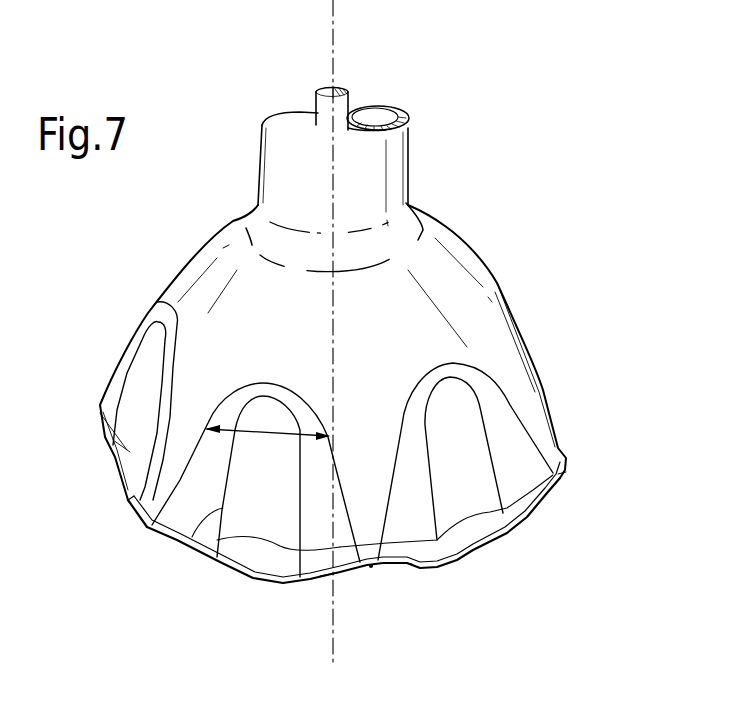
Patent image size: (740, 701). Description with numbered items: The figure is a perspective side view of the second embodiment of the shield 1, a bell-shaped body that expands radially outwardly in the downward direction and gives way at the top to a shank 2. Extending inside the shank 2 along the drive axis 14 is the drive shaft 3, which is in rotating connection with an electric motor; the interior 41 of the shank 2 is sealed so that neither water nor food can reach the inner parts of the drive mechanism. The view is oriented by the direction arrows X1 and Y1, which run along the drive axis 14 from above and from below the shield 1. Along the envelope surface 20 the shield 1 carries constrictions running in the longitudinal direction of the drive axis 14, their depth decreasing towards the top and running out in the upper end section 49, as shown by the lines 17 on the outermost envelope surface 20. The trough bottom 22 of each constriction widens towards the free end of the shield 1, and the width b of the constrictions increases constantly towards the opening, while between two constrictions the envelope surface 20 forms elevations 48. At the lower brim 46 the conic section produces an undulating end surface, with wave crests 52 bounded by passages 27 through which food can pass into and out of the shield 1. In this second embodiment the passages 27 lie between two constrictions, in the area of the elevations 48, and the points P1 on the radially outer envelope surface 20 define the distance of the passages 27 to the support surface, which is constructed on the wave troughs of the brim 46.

The shield 1 is at (485, 250).
The shank 2 is at (390, 163).
The drive shaft 3 is at (320, 103).
The drive axis 14 is at (336, 80).
The lines 17 is at (470, 363).
The envelope surface 20 is at (477, 323).
The inner fictitious edge / trough bottom 22 is at (184, 543).
The passages 27 is at (407, 567).
The interior of the shank 41 is at (373, 115).
The brim 46 is at (253, 577).
The elevations 48 is at (168, 463).
The upper end section 49 is at (220, 380).
The wave crests 52 is at (325, 578).
The axis X1 is at (333, 4).
The Y1 direction Y1 is at (333, 624).
The points P1 is at (380, 577).
The width b is at (267, 422).